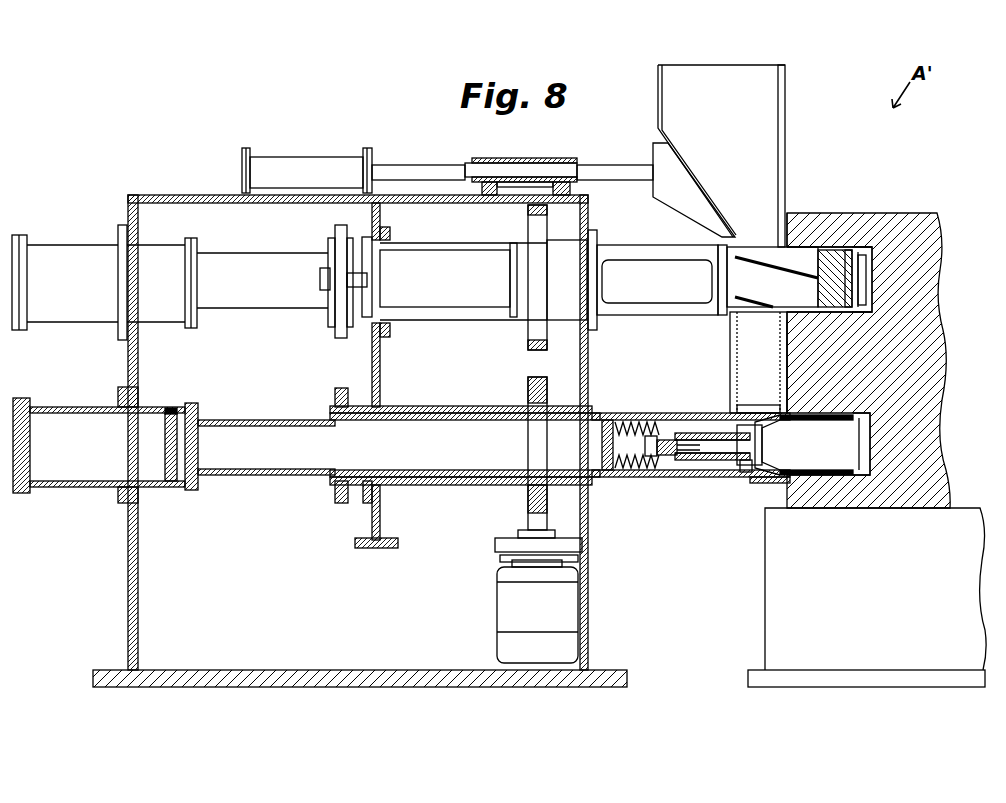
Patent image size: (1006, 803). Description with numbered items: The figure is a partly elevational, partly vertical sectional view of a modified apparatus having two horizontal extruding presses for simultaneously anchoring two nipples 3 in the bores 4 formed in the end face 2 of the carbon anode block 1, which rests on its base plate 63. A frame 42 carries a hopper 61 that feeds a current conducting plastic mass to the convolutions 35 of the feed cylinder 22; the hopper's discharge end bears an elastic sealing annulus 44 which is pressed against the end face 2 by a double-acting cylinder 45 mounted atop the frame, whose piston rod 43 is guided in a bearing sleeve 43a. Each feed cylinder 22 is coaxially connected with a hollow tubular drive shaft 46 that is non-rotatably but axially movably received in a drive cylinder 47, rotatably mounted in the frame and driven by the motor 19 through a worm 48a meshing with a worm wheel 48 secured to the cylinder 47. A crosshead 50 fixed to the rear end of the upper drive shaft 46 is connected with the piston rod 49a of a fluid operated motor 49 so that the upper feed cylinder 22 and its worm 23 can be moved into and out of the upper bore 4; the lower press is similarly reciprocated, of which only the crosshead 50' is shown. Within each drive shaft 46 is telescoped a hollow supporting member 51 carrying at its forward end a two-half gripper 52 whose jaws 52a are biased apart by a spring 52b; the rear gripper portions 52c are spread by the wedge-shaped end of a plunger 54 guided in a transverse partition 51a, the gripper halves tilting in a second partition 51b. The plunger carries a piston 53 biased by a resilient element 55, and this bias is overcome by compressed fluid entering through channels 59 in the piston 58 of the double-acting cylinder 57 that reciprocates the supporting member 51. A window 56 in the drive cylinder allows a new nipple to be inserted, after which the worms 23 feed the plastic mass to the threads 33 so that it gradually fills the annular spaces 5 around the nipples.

The carbon anode block 1 is at (920, 220).
The end face 2 is at (780, 345).
The nipple 3 is at (863, 265).
The bore 4 is at (880, 250).
The annular space 5 is at (852, 255).
The motor 19 is at (575, 600).
The feed cylinder 22 is at (758, 258).
The worm 23 is at (845, 288).
The threads 33 is at (826, 247).
The convolutions 35 is at (745, 262).
The frame 42 is at (145, 196).
The piston rod 43 is at (610, 167).
The bearing sleeve 43a is at (497, 158).
The sealing annulus 44 is at (793, 247).
The double-acting cylinder 45 is at (318, 162).
The drive shaft 46 is at (642, 252).
The drive cylinder 47 is at (412, 252).
The worm wheel 48 is at (541, 224).
The worm 48a is at (530, 372).
The fluid operated motor 49 is at (465, 267).
The piston rod 49a is at (370, 283).
The crosshead 50 is at (321, 272).
The crosshead 50' is at (339, 463).
The supporting member 51 is at (238, 256).
The transverse partition 51a is at (662, 477).
The second partition 51b is at (725, 480).
The gripper 52 is at (705, 477).
The jaws 52a is at (762, 483).
The spring 52b is at (745, 482).
The rear gripper portions 52c is at (690, 478).
The piston 53 is at (607, 413).
The plunger 54 is at (690, 440).
The resilient element 55 is at (640, 422).
The window 56 is at (685, 272).
The double-acting cylinder 57 is at (75, 246).
The piston 58 is at (170, 408).
The channel 59 is at (165, 445).
The hopper 61 is at (770, 103).
The base plate 63 is at (765, 608).